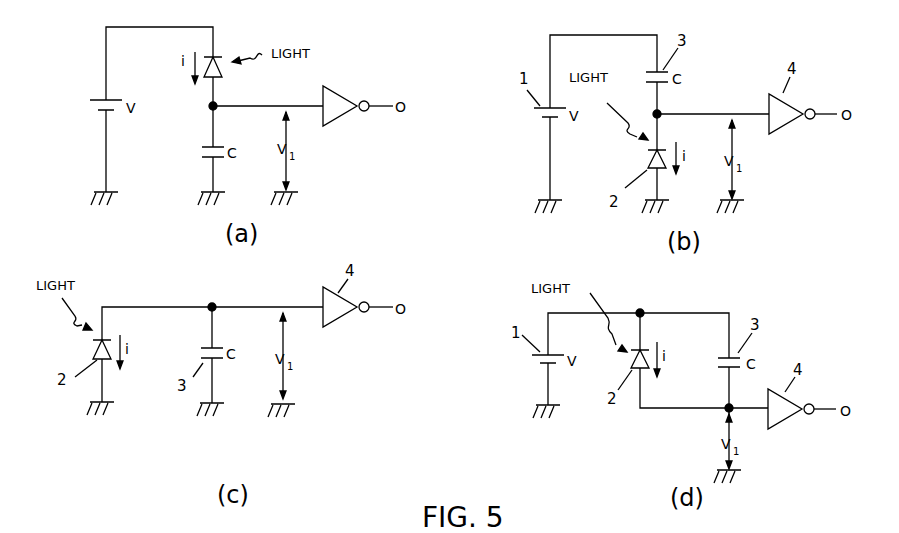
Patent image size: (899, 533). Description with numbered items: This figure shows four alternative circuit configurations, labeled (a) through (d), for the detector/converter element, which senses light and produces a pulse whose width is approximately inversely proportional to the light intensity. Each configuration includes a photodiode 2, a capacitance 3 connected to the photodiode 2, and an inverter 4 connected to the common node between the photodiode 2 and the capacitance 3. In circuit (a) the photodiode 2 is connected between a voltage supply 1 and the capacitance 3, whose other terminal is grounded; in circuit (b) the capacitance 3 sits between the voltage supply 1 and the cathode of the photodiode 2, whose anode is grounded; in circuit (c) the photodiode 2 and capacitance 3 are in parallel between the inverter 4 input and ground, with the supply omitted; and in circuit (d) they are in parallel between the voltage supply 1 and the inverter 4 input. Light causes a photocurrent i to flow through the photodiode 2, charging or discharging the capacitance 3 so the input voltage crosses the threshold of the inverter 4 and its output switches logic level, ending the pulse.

The voltage supply 1 is at (95, 98).
The photodiode 2 is at (210, 77).
The capacitance 3 is at (205, 160).
The inverter 4 is at (340, 92).